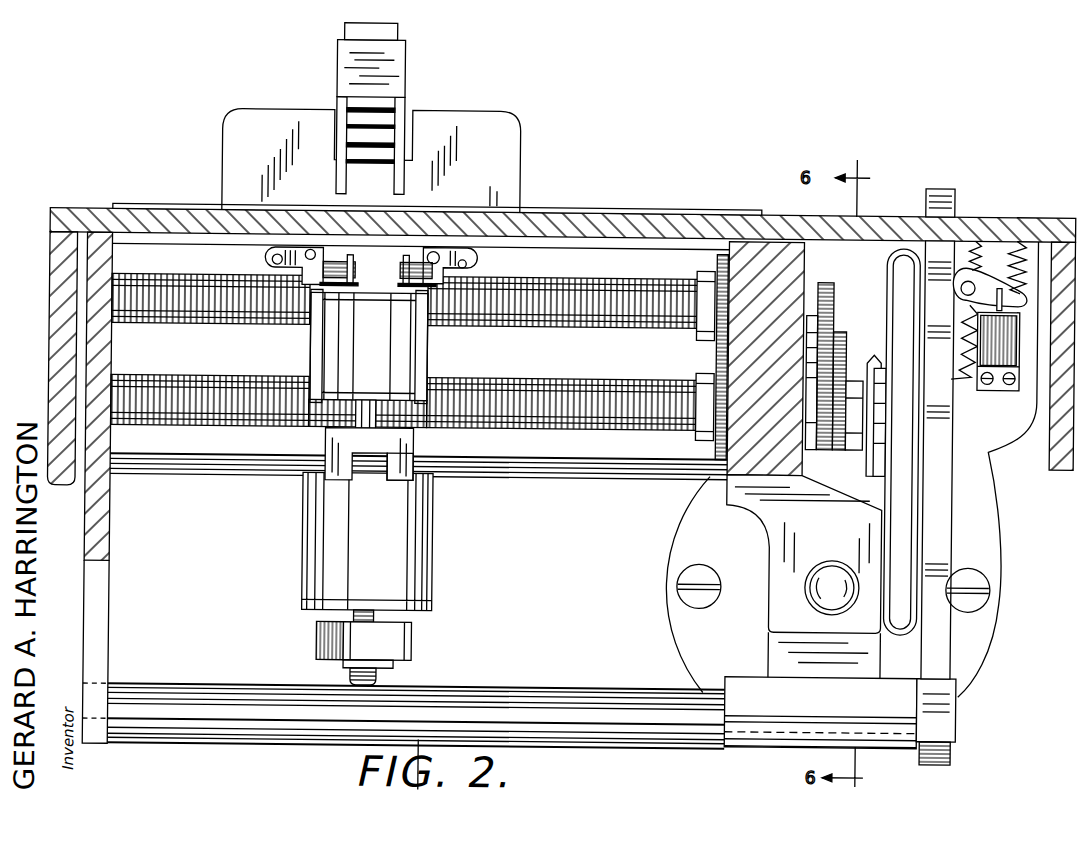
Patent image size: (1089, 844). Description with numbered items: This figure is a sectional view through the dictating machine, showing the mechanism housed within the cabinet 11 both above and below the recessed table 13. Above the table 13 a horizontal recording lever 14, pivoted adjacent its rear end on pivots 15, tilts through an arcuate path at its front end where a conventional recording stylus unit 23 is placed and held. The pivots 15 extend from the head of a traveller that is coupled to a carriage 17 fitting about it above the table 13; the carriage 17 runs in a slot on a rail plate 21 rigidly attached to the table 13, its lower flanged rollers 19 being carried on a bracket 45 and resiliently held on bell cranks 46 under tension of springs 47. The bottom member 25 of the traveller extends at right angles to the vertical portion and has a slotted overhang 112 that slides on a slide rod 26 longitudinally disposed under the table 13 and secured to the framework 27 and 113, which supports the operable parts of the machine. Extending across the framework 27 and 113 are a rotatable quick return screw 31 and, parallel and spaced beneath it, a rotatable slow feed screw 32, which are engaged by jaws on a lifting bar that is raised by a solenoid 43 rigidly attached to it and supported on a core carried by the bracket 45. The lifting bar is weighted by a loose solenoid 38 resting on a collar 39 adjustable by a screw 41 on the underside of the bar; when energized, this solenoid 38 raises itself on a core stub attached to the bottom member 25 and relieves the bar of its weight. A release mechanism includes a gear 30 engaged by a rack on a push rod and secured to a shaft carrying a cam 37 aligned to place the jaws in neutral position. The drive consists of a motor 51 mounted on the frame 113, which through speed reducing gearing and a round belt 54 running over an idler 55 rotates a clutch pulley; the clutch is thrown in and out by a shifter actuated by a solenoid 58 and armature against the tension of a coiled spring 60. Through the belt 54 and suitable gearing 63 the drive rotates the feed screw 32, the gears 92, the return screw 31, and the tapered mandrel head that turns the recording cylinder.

The cabinet 11 is at (48, 288).
The table 13 is at (74, 213).
The recording lever 14 is at (383, 69).
The pivots 15 is at (381, 135).
The carriage 17 is at (511, 130).
The lower flanged rollers 19 is at (263, 261).
The rail plate 21 is at (652, 208).
The recording stylus unit 23 is at (396, 33).
The bottom member 25 is at (325, 443).
The slide rod 26 is at (542, 462).
The framework 27 is at (110, 535).
The gear 30 is at (960, 759).
The quick return screw 31 is at (588, 282).
The slow feed screw 32 is at (555, 393).
The cam 37 is at (207, 698).
The loose solenoid 38 is at (434, 570).
The collar 39 is at (414, 640).
The screw 41 is at (380, 683).
The solenoid 43 is at (369, 346).
The bracket 45 is at (378, 270).
The bell cranks 46 is at (271, 257).
The springs 47 is at (398, 290).
The motor 51 is at (982, 549).
The round belt 54 is at (888, 289).
The idler 55 is at (871, 353).
The solenoid 58 is at (998, 357).
The coiled spring 60 is at (1026, 257).
The gearing 63 is at (831, 289).
The gears 92 is at (714, 274).
The slotted overhang 112 is at (412, 457).
The framework 113 is at (803, 263).